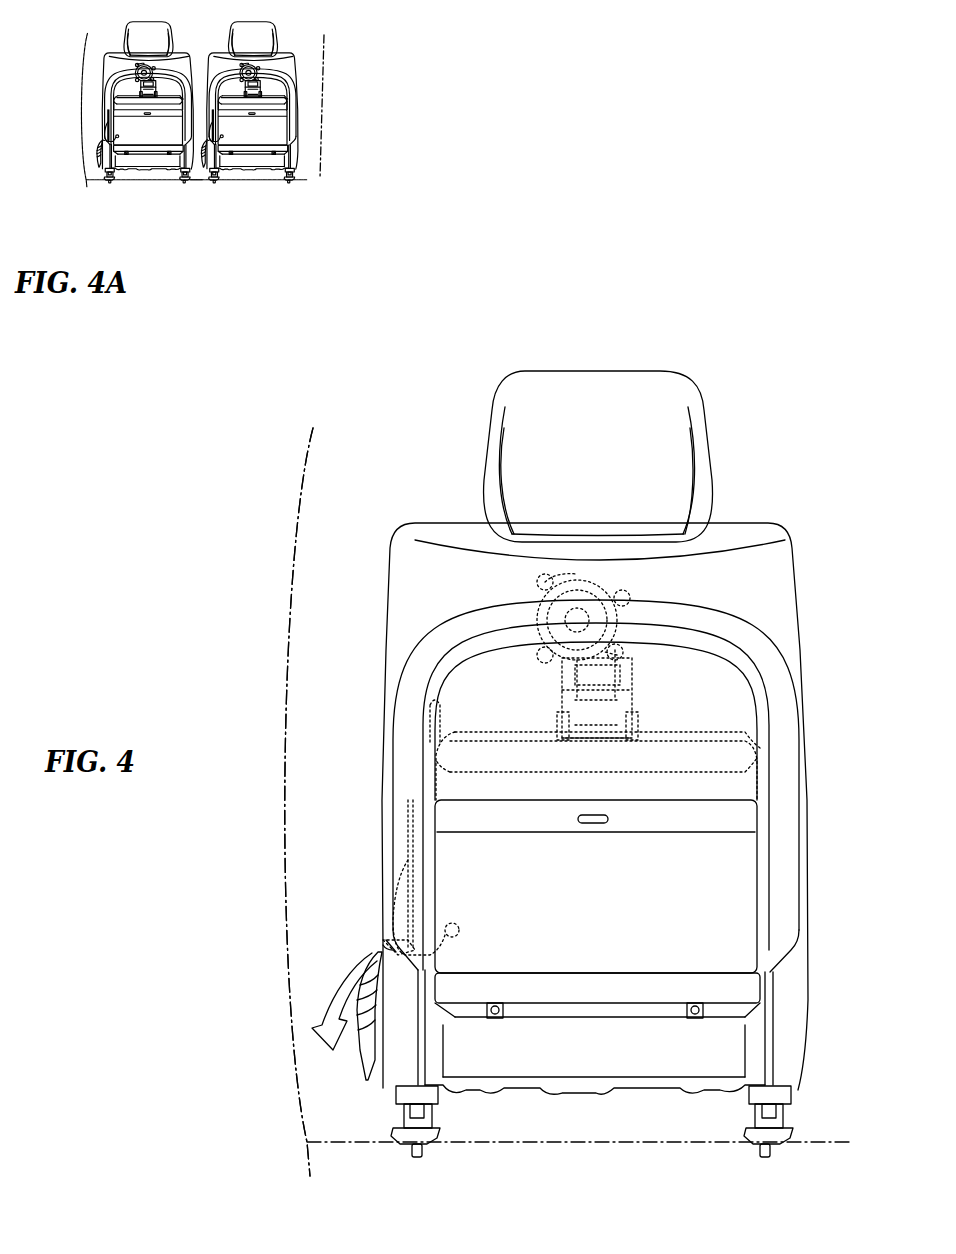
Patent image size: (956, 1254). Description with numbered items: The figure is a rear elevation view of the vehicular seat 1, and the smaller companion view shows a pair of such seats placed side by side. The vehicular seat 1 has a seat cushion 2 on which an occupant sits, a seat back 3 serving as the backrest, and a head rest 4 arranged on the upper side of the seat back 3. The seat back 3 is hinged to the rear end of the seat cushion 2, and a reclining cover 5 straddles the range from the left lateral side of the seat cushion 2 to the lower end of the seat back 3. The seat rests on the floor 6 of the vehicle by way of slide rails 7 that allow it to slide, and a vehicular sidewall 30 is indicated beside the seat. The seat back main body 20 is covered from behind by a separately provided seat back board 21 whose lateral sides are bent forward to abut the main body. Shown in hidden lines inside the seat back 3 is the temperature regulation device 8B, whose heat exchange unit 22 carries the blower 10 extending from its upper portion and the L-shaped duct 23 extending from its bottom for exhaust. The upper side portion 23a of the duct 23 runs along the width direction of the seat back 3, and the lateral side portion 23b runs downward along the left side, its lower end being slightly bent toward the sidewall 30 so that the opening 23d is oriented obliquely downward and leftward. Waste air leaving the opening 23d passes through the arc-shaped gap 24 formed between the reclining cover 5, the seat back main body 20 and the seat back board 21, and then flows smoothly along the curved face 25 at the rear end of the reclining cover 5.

In FIG. 4, the vehicular seat 1 is at (800, 422).
In FIG. 4A, the vehicular seat 1 is at (150, 182).
In FIG. 4, the seat cushion 2 is at (590, 1077).
In FIG. 4, the seat back 3 is at (800, 570).
In FIG. 4, the head rest 4 is at (645, 382).
In FIG. 4, the reclining cover 5 is at (370, 1058).
In FIG. 4, the floor 6 is at (840, 1142).
In FIG. 4, the slide rail 7 is at (405, 1113).
In FIG. 4, the temperature regulation device 8B is at (628, 659).
In FIG. 4, the blower 10 is at (603, 584).
In FIG. 4, the seat back main body 20 is at (797, 642).
In FIG. 4, the seat back board 21 is at (733, 868).
In FIG. 4, the heat exchange unit 22 is at (642, 710).
In FIG. 4, the duct 23 is at (415, 768).
In FIG. 4, the upper side portion 23a is at (490, 750).
In FIG. 4, the lateral side portion 23b is at (395, 868).
In FIG. 4, the opening 23d is at (383, 943).
In FIG. 4, the gap 24 is at (386, 944).
In FIG. 4, the curved face 25 is at (372, 953).
In FIG. 4, the vehicular sidewall 30 is at (283, 516).